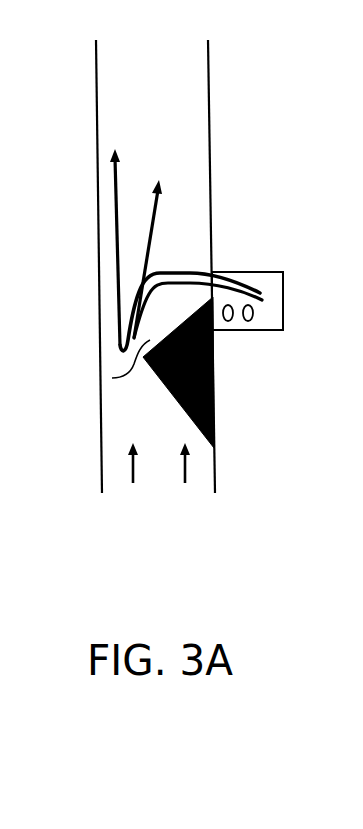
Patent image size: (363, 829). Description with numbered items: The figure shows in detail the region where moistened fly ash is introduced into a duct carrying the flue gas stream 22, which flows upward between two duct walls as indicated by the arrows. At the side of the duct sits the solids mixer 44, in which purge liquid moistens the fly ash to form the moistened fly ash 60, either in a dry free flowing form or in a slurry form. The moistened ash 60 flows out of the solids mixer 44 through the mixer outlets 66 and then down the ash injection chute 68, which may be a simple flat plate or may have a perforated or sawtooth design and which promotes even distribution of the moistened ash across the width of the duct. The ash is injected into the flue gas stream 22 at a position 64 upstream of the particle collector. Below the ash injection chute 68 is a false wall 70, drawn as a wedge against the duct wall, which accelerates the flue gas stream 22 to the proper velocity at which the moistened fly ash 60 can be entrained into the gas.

The flue gas stream 22 is at (159, 483).
The solids mixer 44 is at (272, 271).
The moistened fly ash 60 is at (186, 271).
The position 64 is at (226, 272).
The mixer outlets 66 is at (232, 322).
The ash injection chute 68 is at (112, 378).
The false wall 70 is at (214, 382).